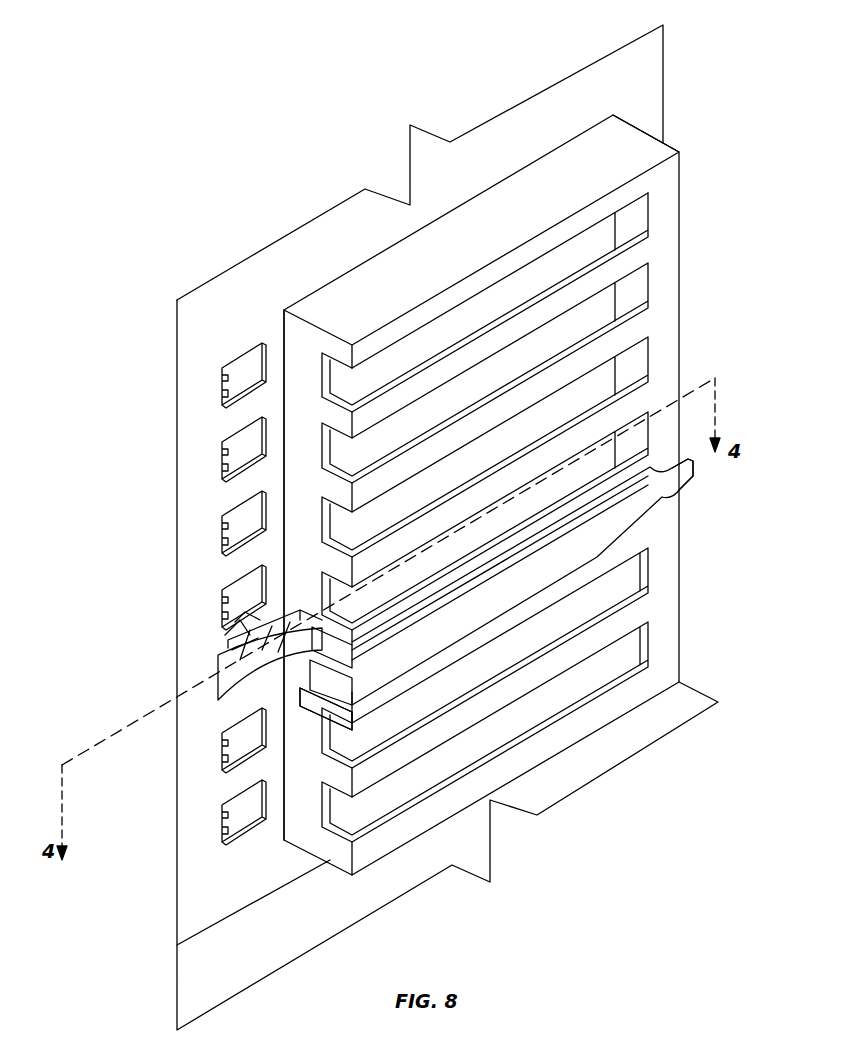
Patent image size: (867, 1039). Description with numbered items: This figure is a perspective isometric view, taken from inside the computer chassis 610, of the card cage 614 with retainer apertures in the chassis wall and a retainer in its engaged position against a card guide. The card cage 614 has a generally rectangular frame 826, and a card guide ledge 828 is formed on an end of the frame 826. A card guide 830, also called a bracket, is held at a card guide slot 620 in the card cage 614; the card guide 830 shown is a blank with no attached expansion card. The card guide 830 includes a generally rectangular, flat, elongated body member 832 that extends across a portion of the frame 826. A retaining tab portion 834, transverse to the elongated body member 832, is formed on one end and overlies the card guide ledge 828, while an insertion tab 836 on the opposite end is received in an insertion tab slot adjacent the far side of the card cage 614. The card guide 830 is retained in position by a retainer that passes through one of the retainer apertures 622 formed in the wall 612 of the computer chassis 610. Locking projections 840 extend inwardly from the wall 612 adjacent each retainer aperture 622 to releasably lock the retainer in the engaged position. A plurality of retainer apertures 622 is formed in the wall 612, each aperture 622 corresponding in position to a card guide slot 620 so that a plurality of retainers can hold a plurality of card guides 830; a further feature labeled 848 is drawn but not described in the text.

The computer chassis 610 is at (174, 180).
The wall 612 is at (200, 292).
The card cage 614 is at (404, 232).
The card guide slot 620 is at (598, 385).
The retainer apertures 622 is at (238, 368).
The frame 826 is at (486, 205).
The card guide ledge 828 is at (300, 330).
The card guide 830 is at (500, 600).
The elongated body member 832 is at (655, 505).
The retaining tab portion 834 is at (335, 647).
The insertion tab 836 is at (696, 468).
The locking projections 840 is at (220, 398).
The clip portion 848 is at (340, 700).